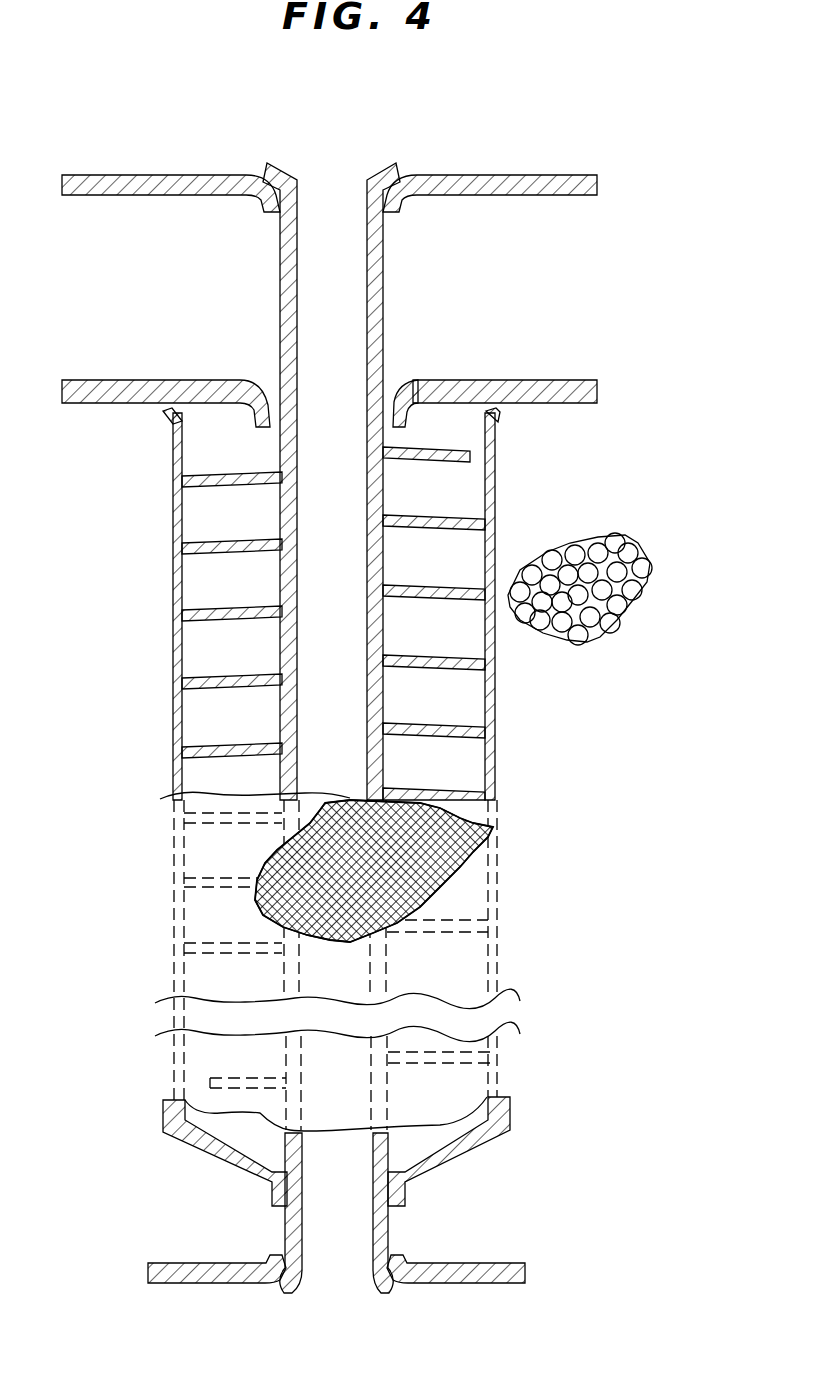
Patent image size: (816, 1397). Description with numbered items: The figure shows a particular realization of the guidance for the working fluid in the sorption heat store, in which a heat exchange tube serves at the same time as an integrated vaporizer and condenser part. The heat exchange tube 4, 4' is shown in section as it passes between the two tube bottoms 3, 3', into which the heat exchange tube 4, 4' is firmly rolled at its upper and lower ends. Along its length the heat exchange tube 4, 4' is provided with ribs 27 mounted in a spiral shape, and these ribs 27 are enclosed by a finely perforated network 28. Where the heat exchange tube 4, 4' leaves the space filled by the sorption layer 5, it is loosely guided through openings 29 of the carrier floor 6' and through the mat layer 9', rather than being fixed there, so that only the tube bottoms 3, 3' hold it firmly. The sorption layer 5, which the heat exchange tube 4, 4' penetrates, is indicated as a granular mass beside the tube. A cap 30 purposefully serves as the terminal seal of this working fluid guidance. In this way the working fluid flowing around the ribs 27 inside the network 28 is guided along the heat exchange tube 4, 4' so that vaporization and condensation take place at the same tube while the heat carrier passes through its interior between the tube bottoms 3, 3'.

The tube bottom 3 is at (362, 1267).
The tube bottom 3' is at (358, 186).
The heat exchange tube 4 is at (359, 1164).
The heat exchange tube 4' is at (350, 580).
The sorption layer 5 is at (632, 556).
The carrier floor 6' is at (358, 396).
The mat layer 9' is at (581, 239).
The rib 27 is at (442, 590).
The network 28 is at (493, 823).
The opening 29 is at (396, 400).
The closing cap 30 is at (505, 1112).